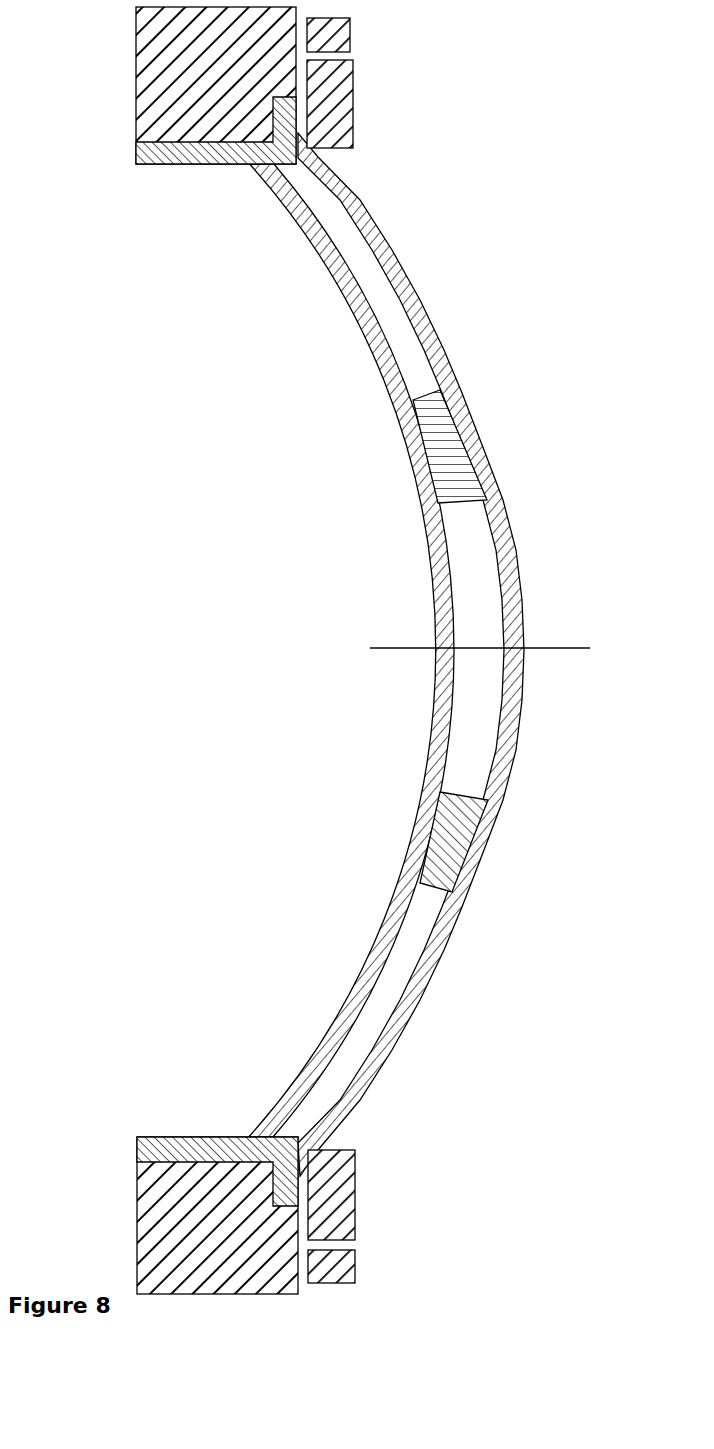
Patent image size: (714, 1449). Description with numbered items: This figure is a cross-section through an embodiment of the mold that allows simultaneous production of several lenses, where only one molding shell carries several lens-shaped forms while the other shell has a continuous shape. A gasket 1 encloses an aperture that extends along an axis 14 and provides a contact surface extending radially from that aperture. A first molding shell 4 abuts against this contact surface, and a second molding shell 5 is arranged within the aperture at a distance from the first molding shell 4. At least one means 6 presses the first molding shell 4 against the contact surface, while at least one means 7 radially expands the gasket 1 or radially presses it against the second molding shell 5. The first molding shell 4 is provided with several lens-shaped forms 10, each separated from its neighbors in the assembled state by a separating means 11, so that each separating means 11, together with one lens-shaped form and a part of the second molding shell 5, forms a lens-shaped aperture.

The gasket 1 is at (180, 164).
The first molding shell 4 is at (448, 654).
The second molding shell 5 is at (450, 697).
The means for pressing 6 is at (350, 33).
The means for radially expanding 7 is at (145, 71).
The lens-shaped forms 10 is at (415, 307).
The separating means 11 is at (442, 458).
The axis 14 is at (499, 640).